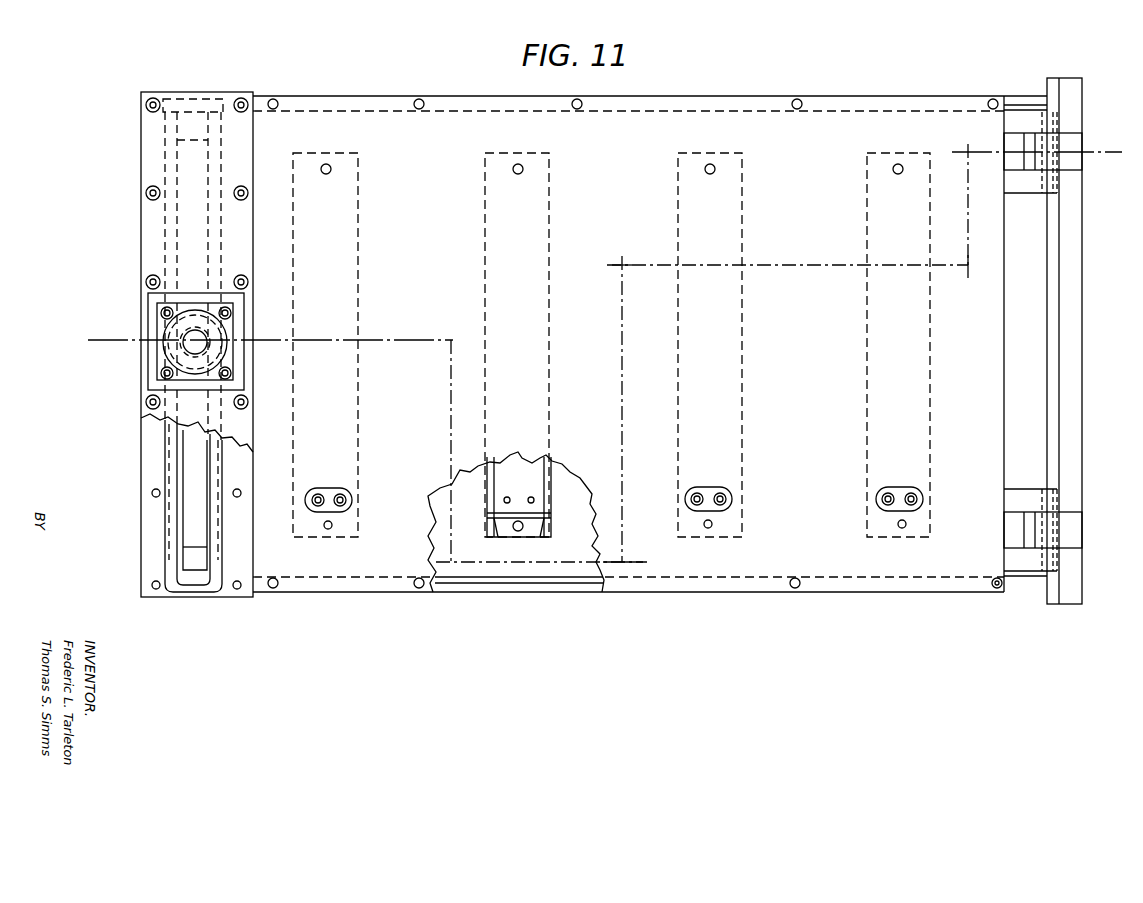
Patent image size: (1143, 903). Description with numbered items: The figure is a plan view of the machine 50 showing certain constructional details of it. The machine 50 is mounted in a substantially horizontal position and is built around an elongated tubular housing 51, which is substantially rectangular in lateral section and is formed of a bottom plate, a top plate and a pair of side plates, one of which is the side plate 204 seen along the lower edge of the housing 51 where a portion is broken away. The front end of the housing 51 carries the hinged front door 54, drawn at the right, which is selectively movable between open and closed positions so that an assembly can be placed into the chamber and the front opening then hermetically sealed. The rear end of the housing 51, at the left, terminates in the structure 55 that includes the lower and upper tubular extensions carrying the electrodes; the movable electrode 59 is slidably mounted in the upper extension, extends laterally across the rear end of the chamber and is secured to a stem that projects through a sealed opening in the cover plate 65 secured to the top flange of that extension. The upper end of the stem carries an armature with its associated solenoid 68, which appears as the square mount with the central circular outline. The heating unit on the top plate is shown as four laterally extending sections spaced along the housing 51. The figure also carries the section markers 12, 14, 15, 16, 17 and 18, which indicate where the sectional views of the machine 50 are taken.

The machine 50 is at (448, 634).
The housing 51 is at (678, 594).
The front door 54 is at (1082, 430).
The structure 55 is at (134, 144).
The movable electrode 59 is at (185, 478).
The cover plate 65 is at (244, 425).
The solenoid 68 is at (222, 340).
The side plate 204 is at (538, 592).
The section line 12- 12 is at (104, 305).
The section line 14- 14 is at (147, 76).
The section line 15- 15 is at (1118, 89).
The section line 16- 16 is at (778, 62).
The section line 17- 17 is at (108, 583).
The section line 18- 18 is at (92, 84).